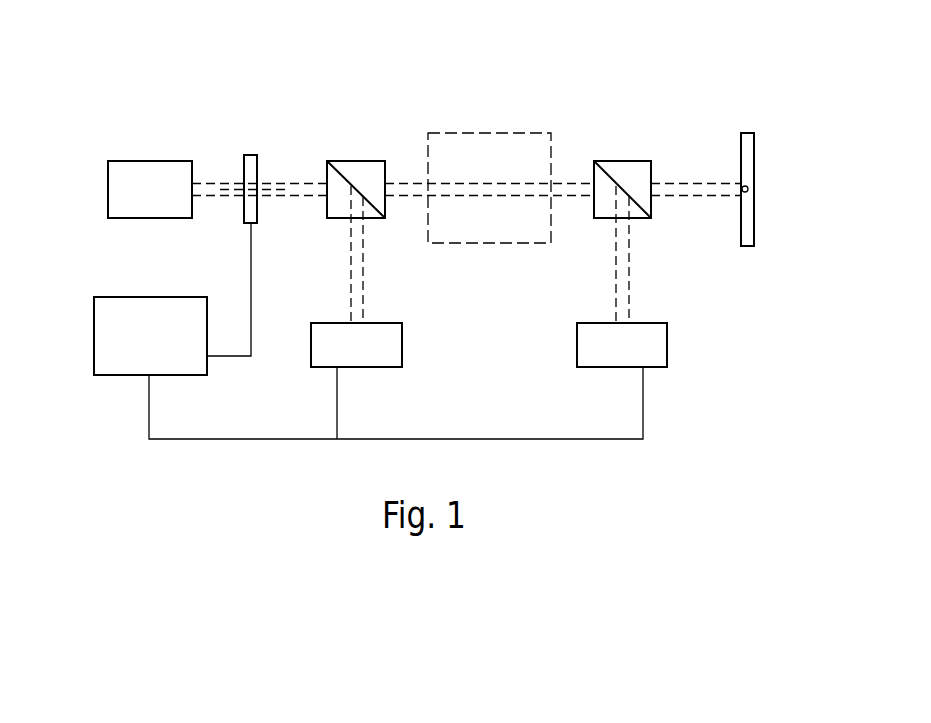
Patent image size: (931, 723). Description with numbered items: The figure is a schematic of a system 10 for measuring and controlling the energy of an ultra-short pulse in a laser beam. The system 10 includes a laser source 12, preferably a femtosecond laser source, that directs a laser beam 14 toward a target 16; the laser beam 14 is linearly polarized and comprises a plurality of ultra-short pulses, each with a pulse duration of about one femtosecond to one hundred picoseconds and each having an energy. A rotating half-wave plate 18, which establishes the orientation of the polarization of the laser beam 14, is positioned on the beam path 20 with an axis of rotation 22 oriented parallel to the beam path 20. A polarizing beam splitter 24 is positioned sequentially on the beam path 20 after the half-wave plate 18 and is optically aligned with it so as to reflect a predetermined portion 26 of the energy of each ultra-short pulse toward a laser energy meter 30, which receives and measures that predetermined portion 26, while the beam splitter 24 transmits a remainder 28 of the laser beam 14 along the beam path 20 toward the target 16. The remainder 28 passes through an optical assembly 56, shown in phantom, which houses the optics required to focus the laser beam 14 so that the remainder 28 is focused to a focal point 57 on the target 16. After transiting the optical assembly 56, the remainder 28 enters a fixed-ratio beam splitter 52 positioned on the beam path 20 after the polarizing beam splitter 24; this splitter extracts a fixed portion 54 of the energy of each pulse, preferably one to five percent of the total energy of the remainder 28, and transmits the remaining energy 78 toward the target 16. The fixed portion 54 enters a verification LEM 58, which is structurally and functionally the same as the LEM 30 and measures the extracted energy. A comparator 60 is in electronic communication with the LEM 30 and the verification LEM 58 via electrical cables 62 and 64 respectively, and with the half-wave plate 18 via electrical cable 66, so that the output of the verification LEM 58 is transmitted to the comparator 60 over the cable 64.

The system 10 is at (190, 59).
The laser source 12 is at (107, 190).
The laser beam 14 is at (226, 200).
The target 16 is at (749, 140).
The rotating half-wave plate 18 is at (252, 162).
The beam path 20 is at (296, 182).
The axis of rotation 22 is at (276, 193).
The polarizing beam splitter 24 is at (352, 168).
The predetermined portion 26 is at (365, 290).
The remainder 28 is at (399, 182).
The laser energy meter 30 is at (395, 346).
The fixed-ratio beam splitter 52 is at (622, 168).
The fixed portion 54 is at (631, 276).
The optical assembly 56 is at (488, 140).
The focal point 57 is at (751, 190).
The verification LEM 58 is at (658, 346).
The comparator 60 is at (100, 331).
The electrical cable 62 is at (336, 402).
The electrical cable 64 is at (510, 438).
The electrical cable 66 is at (253, 300).
The remaining energy 78 is at (701, 182).